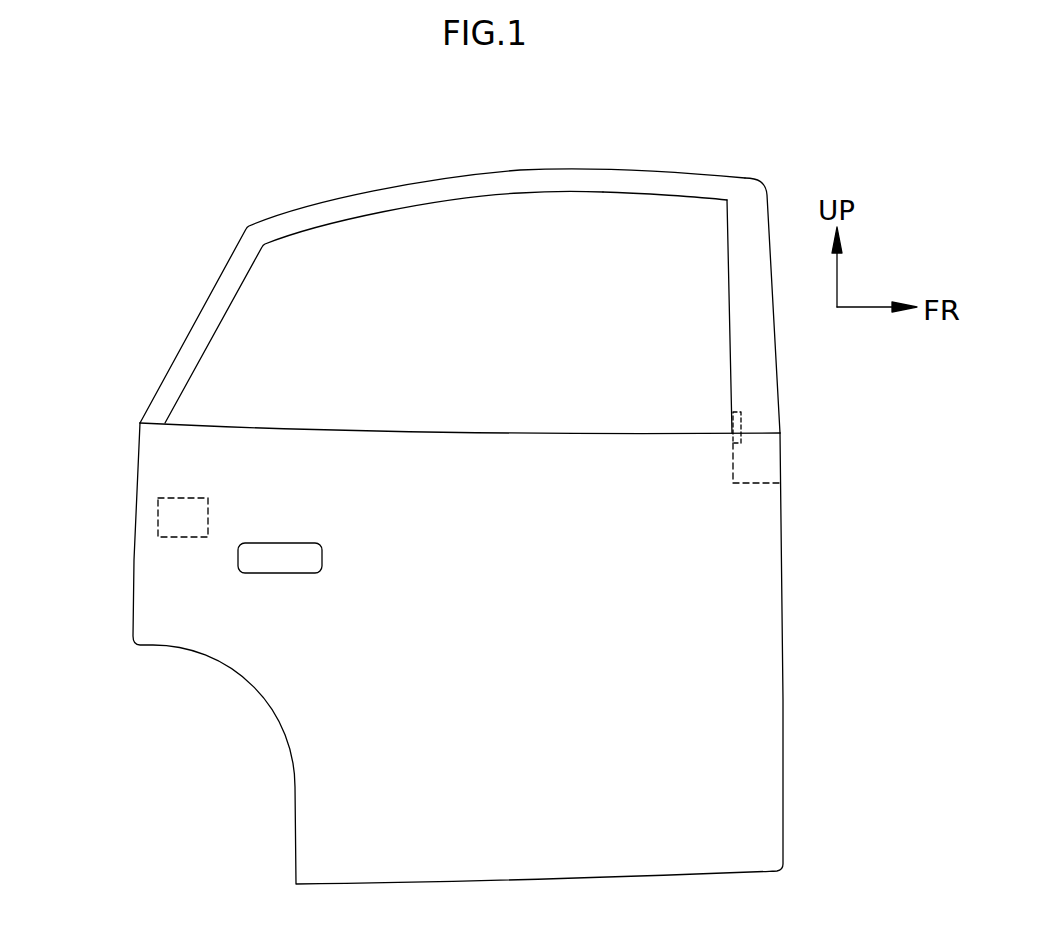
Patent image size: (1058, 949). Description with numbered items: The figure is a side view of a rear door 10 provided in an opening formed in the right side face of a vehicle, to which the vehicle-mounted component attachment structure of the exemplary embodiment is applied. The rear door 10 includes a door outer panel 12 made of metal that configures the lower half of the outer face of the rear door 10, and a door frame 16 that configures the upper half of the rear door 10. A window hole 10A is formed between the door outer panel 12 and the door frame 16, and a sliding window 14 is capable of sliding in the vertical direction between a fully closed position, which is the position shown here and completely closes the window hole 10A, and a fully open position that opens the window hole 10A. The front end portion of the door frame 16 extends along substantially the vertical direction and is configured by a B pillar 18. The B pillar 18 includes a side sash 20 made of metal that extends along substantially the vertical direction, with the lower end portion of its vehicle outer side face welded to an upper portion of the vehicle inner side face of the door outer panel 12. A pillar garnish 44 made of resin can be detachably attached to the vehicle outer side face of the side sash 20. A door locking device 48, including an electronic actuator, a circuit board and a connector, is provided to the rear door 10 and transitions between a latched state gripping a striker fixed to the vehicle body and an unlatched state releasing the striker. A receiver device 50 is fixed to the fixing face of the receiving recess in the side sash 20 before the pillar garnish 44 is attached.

The rear door 10 is at (116, 361).
The window hole 10A is at (655, 197).
The door outer panel 12 is at (148, 555).
The sliding window 14 is at (557, 220).
The door frame 16 is at (295, 218).
The B pillar 18 is at (755, 200).
The side sash 20 is at (747, 472).
The pillar garnish 44 is at (760, 368).
The door locking device 48 is at (203, 515).
The receiver device 50 is at (731, 424).